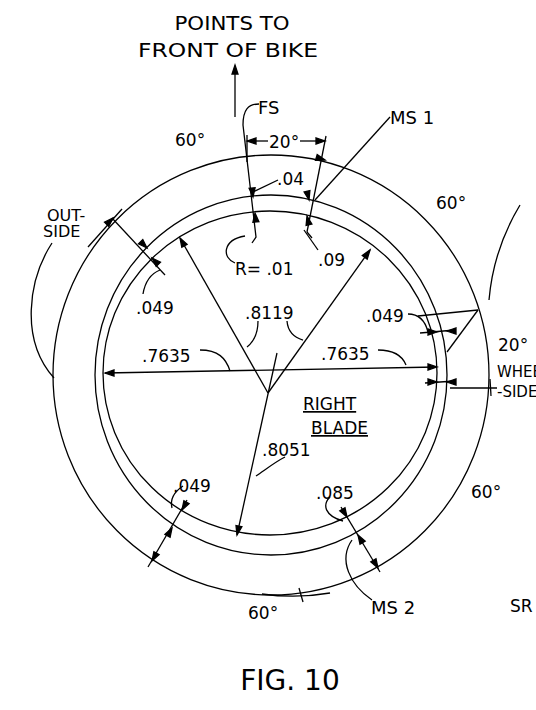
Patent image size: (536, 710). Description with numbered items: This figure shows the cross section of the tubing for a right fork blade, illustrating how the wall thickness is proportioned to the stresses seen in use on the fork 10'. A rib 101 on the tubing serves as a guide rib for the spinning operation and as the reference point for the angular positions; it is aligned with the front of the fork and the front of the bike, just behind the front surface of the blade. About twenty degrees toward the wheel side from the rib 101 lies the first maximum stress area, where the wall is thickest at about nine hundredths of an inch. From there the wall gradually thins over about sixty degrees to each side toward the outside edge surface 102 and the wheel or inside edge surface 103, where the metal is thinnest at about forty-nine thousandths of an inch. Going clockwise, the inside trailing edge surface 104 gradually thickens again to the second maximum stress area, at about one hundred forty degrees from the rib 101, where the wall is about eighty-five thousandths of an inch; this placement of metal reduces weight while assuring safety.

The rib 101 is at (186, 218).
The outside edge surface 102 is at (54, 378).
The wheel or inside edge surface 103 is at (478, 312).
The trailing edge surface 104 is at (302, 597).
The fork blade 10' is at (512, 233).